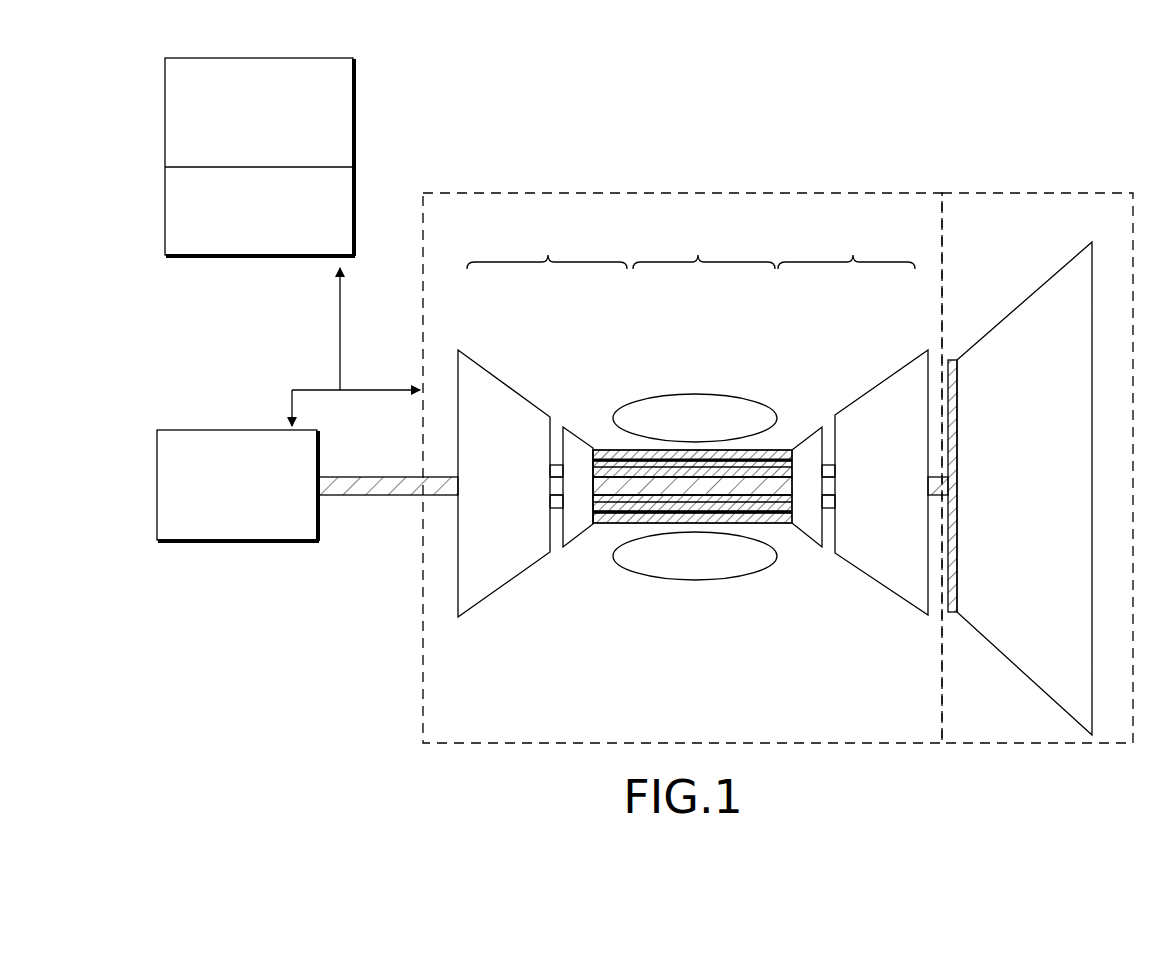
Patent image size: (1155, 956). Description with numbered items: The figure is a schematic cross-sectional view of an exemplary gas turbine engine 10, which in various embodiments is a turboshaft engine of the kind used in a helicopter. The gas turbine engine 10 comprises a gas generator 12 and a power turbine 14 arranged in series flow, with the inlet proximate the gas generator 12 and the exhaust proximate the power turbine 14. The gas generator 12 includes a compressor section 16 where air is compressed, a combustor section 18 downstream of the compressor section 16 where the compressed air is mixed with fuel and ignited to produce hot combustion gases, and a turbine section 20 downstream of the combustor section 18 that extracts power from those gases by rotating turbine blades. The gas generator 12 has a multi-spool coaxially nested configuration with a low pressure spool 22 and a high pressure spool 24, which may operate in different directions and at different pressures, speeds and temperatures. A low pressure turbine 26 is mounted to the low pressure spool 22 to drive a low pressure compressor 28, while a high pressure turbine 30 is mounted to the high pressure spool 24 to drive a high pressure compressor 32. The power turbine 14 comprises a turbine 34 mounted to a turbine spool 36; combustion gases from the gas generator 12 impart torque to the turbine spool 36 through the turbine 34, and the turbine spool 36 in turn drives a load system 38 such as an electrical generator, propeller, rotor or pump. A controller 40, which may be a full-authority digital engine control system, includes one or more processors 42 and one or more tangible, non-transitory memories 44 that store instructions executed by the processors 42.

The gas turbine engine 10 is at (960, 158).
The gas generator 12 is at (722, 192).
The power turbine 14 is at (1064, 191).
The compressor section 16 is at (542, 420).
The combustor section 18 is at (692, 401).
The turbine section 20 is at (853, 419).
The low pressure spool 22 is at (555, 463).
The high pressure spool 24 is at (782, 449).
The low pressure turbine 26 is at (882, 372).
The low pressure compressor 28 is at (510, 385).
The high pressure turbine 30 is at (812, 430).
The high pressure compressor 32 is at (586, 442).
The turbine 34 is at (1005, 318).
The turbine spool 36 is at (952, 370).
The load system 38 is at (236, 541).
The controller 40 is at (164, 107).
The processor 42 is at (259, 119).
The memory 44 is at (259, 215).